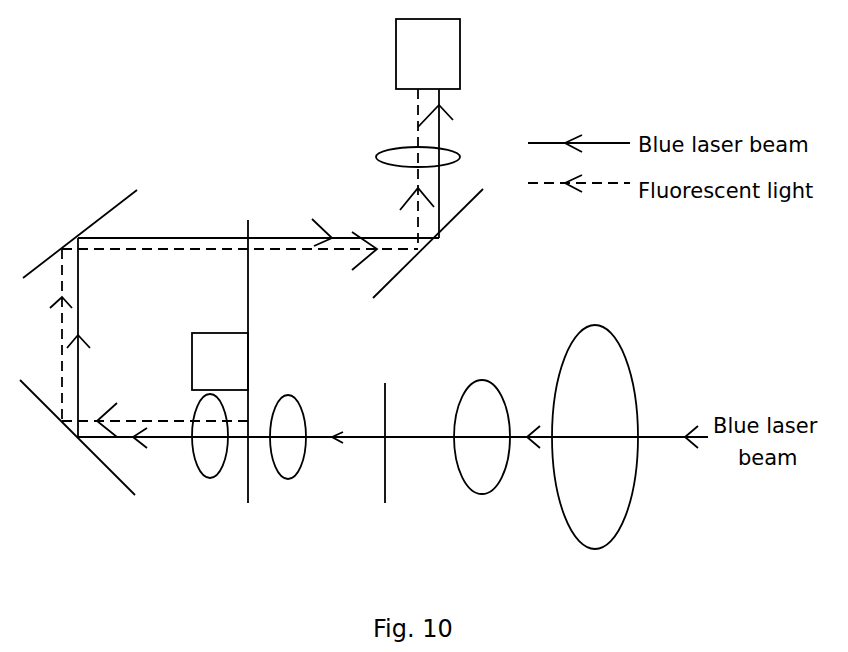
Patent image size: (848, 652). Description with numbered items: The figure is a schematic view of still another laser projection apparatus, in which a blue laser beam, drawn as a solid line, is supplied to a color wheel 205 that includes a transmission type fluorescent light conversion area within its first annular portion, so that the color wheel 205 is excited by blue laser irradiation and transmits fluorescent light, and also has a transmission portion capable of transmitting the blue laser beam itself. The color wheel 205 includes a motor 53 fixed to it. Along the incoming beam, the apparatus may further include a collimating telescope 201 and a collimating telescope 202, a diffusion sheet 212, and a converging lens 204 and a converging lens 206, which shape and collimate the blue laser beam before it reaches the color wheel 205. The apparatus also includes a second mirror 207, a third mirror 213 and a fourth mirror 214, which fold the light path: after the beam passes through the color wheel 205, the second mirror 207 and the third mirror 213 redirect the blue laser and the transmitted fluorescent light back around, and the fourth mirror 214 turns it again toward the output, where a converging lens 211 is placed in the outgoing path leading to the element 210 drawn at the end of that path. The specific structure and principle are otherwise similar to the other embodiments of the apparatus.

The collimating telescope 201 is at (594, 325).
The collimating telescope 202 is at (482, 380).
The diffusion sheet 212 is at (385, 465).
The converging lens 204 is at (288, 478).
The converging lens 206 is at (210, 478).
The color wheel 205 is at (248, 302).
The motor 53 is at (192, 368).
The second mirror 207 is at (62, 421).
The third mirror 213 is at (62, 248).
The fourth mirror 214 is at (410, 265).
The converging lens 211 is at (378, 157).
The light receiving unit 210 is at (462, 62).